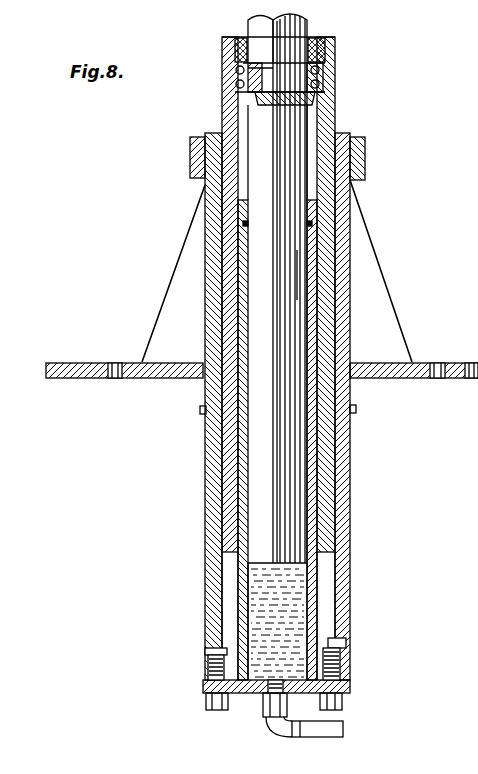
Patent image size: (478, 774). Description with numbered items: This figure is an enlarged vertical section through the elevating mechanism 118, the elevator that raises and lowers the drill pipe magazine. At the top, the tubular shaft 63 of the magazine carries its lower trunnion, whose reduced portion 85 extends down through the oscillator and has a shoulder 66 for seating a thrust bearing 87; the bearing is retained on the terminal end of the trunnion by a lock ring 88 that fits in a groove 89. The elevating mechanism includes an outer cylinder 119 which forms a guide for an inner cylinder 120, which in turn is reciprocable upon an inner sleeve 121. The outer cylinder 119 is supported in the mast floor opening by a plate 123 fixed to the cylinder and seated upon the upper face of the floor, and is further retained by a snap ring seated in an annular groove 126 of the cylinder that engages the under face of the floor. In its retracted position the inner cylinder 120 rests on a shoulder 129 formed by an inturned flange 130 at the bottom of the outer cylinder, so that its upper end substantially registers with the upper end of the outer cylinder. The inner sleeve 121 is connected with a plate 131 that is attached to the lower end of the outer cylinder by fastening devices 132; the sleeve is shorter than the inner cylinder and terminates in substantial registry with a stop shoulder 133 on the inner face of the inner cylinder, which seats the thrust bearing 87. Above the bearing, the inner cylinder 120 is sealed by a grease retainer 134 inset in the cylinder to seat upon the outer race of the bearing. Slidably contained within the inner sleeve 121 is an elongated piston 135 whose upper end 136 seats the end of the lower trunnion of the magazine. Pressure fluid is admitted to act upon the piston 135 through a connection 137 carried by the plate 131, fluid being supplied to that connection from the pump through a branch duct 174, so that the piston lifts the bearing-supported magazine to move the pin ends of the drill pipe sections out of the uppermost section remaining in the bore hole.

The tubular shaft 63 is at (306, 28).
The reduced portion of the trunnion 85 is at (265, 34).
The grease retainer 134 is at (230, 52).
The collar 66 is at (326, 54).
The thrust bearing 87 is at (232, 76).
The lock ring 88 is at (233, 94).
The groove 89 is at (265, 90).
The stop shoulder 133 is at (337, 93).
The upper end of the piston 136 is at (292, 113).
The elevating mechanism 118 is at (365, 134).
The inner cylinder 120 is at (232, 215).
The outer cylinder 119 is at (220, 258).
The inner sleeve 121 is at (245, 287).
The elongated piston 135 is at (298, 276).
The plate 123 is at (93, 363).
The annular groove 126 is at (200, 409).
The shoulder 129 is at (343, 641).
The inturned flange 130 is at (343, 664).
The plate 131 is at (205, 688).
The fastening devices 132 is at (207, 702).
The pressure fluid connection 137 is at (266, 722).
The branch duct 174 is at (325, 733).